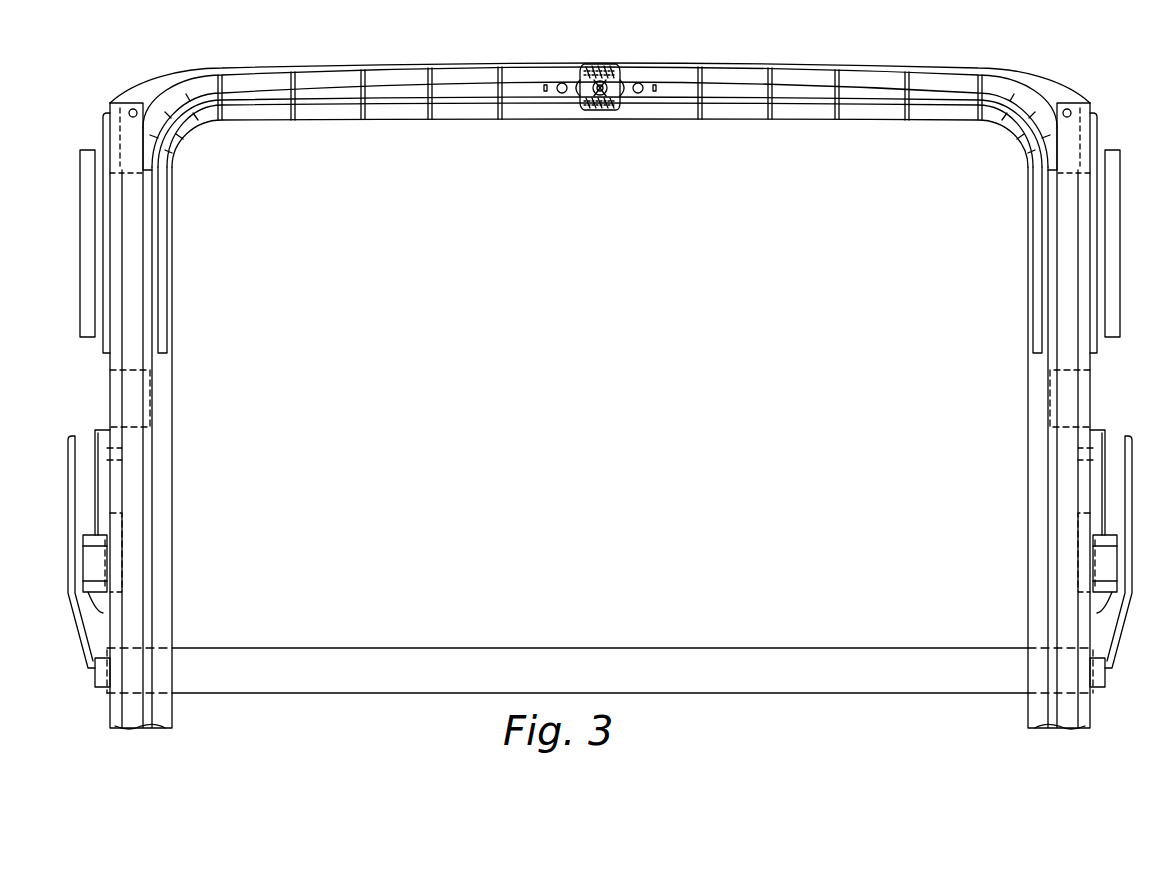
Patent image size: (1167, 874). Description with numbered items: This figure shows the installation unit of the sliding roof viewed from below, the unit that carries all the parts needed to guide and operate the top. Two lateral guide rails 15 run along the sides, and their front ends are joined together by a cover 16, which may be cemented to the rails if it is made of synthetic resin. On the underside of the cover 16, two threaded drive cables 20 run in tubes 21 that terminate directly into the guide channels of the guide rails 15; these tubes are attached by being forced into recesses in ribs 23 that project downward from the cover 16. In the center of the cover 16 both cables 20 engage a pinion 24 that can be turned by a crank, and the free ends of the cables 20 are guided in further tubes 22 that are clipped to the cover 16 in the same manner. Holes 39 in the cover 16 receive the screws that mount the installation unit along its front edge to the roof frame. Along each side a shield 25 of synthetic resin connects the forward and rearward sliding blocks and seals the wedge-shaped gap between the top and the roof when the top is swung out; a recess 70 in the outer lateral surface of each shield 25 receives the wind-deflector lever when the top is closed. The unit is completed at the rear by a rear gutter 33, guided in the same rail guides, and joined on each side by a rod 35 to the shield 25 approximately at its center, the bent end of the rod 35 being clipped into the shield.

The lateral guide rail 15 is at (165, 517).
The cover 16 is at (950, 58).
The drive cable 20 is at (598, 74).
The tube 21 is at (405, 80).
The tube 22 is at (330, 100).
The rib 23 is at (498, 117).
The pinion 24 is at (586, 72).
The shield 25 is at (95, 386).
The rear gutter 33 is at (715, 665).
The rod 35 is at (72, 542).
The hole 39 is at (641, 84).
The recess 70 is at (90, 260).